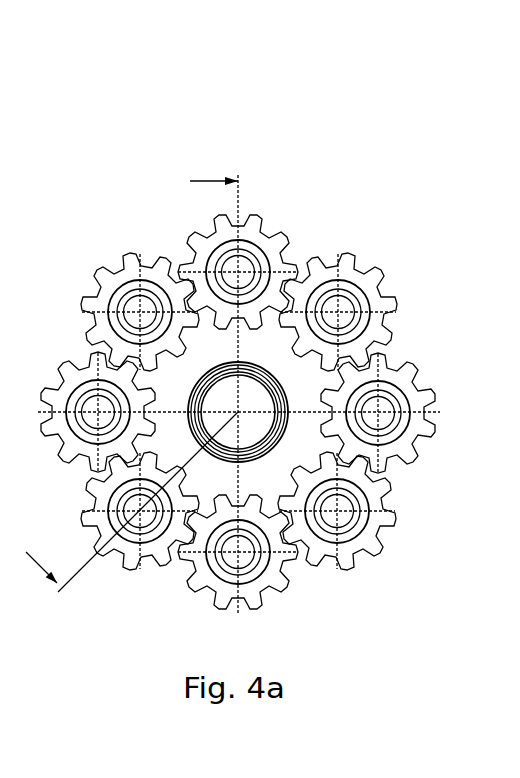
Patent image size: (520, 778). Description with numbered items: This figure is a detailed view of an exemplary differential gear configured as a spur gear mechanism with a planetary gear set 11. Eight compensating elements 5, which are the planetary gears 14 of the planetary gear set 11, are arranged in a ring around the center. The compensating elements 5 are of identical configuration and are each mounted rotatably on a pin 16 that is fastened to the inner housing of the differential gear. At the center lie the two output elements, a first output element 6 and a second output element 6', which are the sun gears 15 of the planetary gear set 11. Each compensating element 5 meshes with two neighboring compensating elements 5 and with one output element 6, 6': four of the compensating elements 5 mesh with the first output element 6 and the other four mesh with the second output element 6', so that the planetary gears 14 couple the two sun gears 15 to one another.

The planetary gear set 11 is at (157, 167).
The compensating element 5 is at (385, 257).
The planetary gear 14 is at (348, 258).
The pin 16 is at (370, 318).
The first output element 6 is at (345, 496).
The second output element 6' is at (345, 496).
The sun gear 15 is at (283, 450).